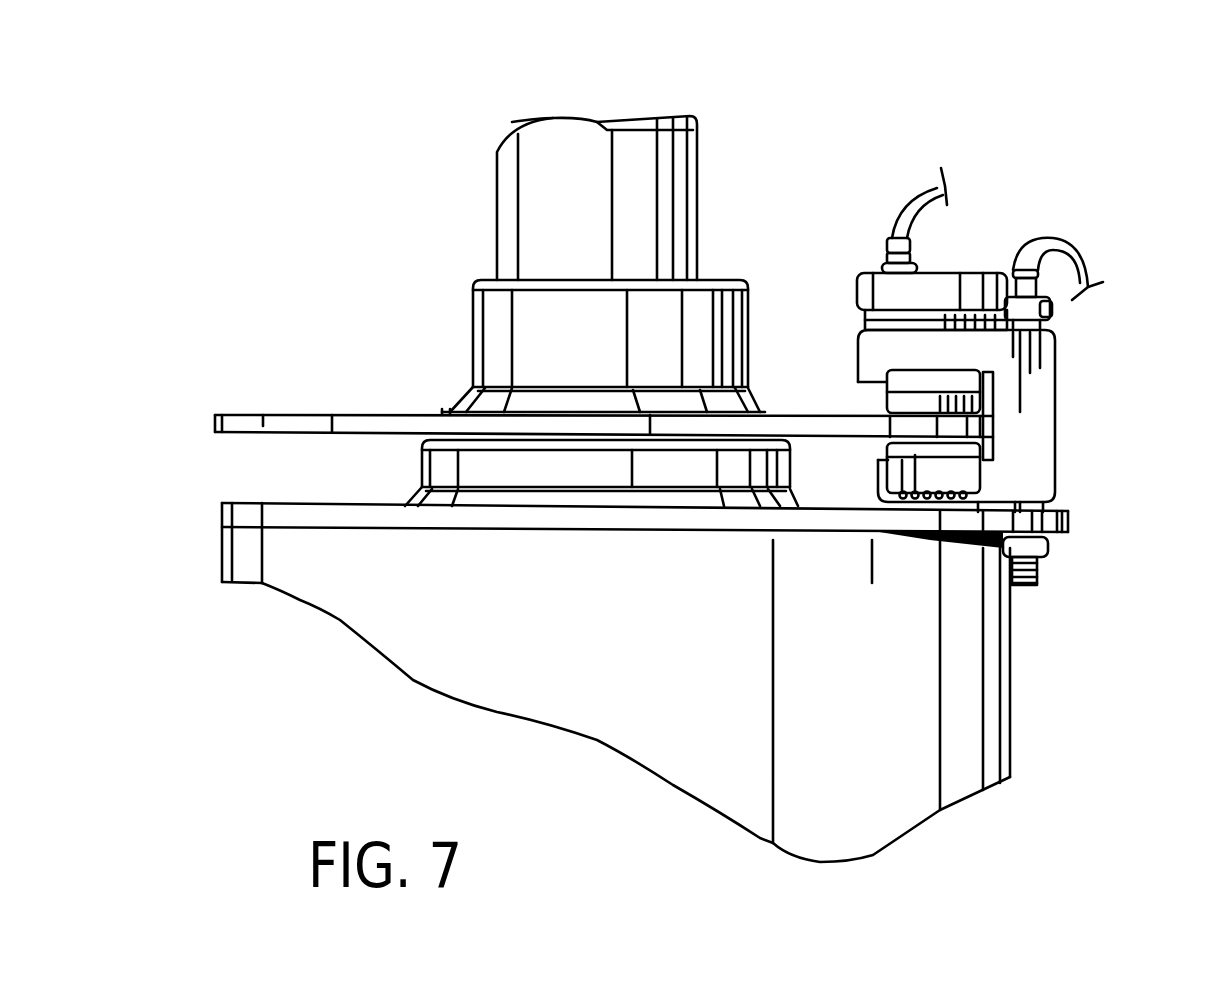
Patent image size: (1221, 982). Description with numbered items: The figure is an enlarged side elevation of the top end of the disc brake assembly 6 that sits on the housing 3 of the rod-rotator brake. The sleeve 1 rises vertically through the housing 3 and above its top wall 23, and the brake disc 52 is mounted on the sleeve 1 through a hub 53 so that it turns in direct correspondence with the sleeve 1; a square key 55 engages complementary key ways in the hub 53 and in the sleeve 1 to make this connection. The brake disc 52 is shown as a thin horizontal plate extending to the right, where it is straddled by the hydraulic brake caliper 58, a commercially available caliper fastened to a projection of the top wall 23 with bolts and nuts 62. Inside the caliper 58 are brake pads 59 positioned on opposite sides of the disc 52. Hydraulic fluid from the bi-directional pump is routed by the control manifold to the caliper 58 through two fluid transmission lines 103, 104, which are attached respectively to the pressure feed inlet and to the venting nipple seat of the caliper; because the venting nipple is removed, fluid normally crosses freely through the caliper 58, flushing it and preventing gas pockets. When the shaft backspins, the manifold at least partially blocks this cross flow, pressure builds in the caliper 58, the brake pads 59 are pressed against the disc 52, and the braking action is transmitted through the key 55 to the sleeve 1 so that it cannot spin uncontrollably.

The sleeve 1 is at (558, 155).
The housing 3 is at (588, 660).
The disc brake assembly 6 is at (1040, 228).
The top wall 23 is at (375, 517).
The brake disc 52 is at (291, 413).
The hub 53 is at (488, 325).
The key 55 is at (498, 177).
The brake caliper 58 is at (1038, 371).
The brake pads 59 is at (983, 408).
The bolts and nuts 62 is at (1038, 562).
The fluid transmission line 103 is at (1078, 252).
The fluid transmission line 104 is at (908, 190).